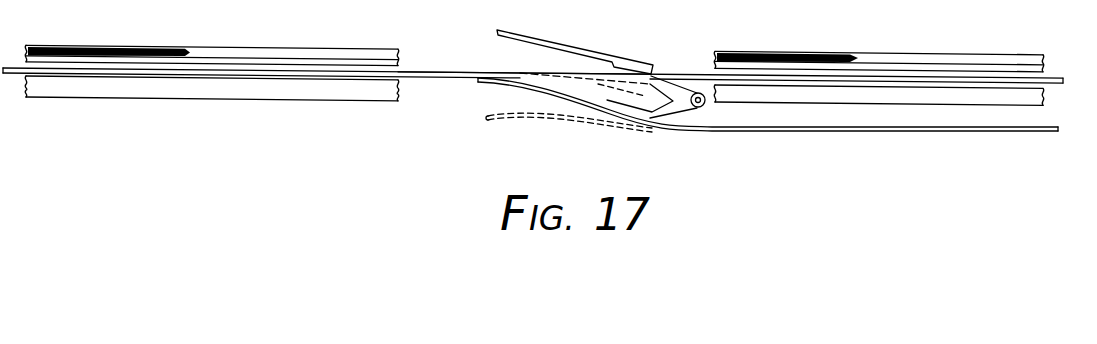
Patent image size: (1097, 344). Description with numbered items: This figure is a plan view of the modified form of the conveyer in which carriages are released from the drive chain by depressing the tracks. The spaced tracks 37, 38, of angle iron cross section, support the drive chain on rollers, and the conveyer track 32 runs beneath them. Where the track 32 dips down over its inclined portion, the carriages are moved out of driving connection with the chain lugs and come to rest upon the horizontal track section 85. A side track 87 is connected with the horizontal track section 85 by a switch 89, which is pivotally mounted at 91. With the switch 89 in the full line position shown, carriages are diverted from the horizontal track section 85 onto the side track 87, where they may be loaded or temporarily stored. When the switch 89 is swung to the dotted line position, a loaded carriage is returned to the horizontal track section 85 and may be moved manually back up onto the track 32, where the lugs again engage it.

The track 32 is at (160, 75).
The track 37 is at (266, 47).
The track 38 is at (240, 100).
The horizontal track section 85 is at (445, 76).
The side track 87 is at (860, 131).
The switch 89 is at (576, 83).
The pivot 91 is at (699, 104).